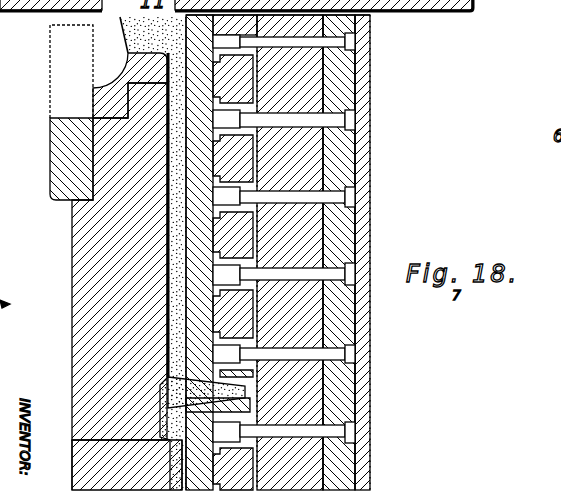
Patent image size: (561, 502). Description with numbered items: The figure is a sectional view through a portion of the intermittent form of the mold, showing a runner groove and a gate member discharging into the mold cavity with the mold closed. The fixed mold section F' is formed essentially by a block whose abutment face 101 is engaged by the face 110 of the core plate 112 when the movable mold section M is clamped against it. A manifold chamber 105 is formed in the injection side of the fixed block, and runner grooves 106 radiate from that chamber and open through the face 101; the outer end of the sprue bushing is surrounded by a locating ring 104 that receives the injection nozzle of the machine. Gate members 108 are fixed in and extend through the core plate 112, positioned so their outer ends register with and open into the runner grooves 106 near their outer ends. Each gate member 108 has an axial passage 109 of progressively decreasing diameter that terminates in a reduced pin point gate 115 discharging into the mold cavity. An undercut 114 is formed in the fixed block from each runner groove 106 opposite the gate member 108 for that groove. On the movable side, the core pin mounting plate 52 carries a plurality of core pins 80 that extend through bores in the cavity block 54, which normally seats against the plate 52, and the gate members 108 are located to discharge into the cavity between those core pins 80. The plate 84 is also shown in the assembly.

The locating ring 104 is at (72, 192).
The runner groove 106 is at (184, 249).
The abutment face 101 is at (183, 462).
The gate member 108 is at (128, 48).
The manifold chamber 105 is at (128, 33).
The face of plate 111 110 is at (178, 183).
The undercut 114 is at (186, 334).
The plate 84 is at (250, 263).
The core pin mounting plate 52 is at (335, 100).
The cavity block 54 is at (325, 168).
The core plate 112 is at (228, 97).
The pin point gate 115 is at (250, 393).
The axial passage 109 is at (250, 408).
The core pin 80 is at (330, 272).
The movable mold section M is at (370, 72).
The fixed mold section F' is at (50, 240).